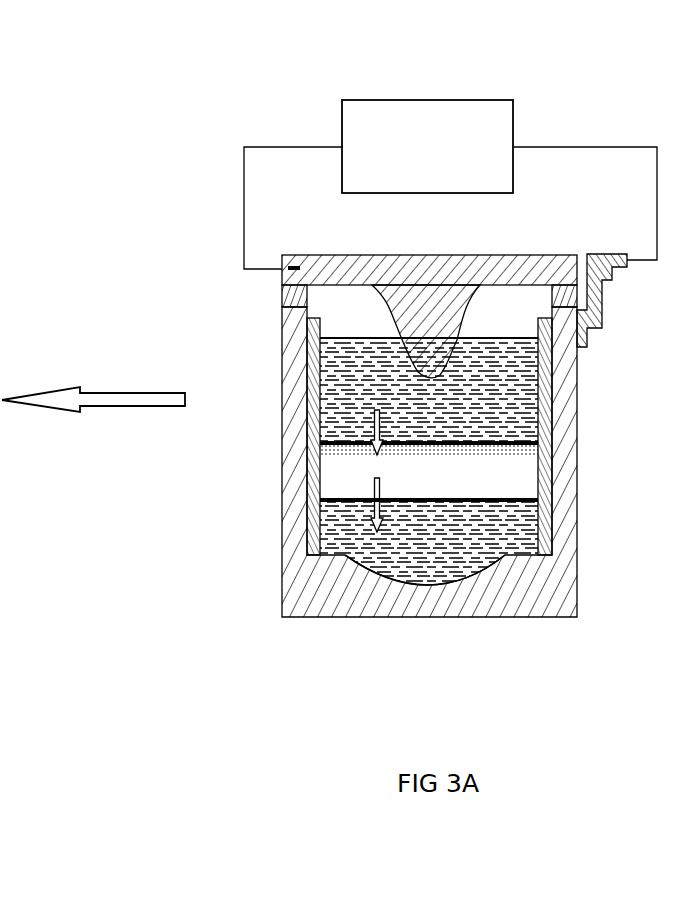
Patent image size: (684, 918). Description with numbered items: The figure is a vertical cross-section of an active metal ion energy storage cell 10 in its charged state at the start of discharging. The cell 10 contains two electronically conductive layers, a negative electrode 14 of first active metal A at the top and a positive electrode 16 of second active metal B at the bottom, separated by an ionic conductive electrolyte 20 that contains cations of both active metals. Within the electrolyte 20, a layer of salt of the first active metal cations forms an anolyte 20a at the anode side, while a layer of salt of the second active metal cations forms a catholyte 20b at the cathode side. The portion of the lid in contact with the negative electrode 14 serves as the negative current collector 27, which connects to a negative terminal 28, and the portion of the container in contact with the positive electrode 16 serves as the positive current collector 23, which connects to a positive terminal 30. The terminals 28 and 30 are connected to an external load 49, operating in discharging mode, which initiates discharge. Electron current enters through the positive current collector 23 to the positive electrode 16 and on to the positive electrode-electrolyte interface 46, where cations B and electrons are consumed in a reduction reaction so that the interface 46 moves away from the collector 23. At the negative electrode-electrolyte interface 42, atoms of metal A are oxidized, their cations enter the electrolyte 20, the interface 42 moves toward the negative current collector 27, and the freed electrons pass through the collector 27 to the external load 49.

The electrochemical cell 10 is at (340, 228).
The negative electrode 14 is at (330, 366).
The positive electrode 16 is at (337, 515).
The electrolyte 20 is at (210, 420).
The anolyte 20a is at (345, 450).
The catholyte 20b is at (350, 468).
The positive current collector 23 is at (430, 588).
The negative current collector 27 is at (433, 348).
The negative terminal 28 is at (280, 263).
The positive terminal 30 is at (603, 254).
The negative electrode-electrolyte interface 42 is at (540, 443).
The positive electrode-electrolyte interface 46 is at (540, 505).
The external load 49 is at (430, 98).